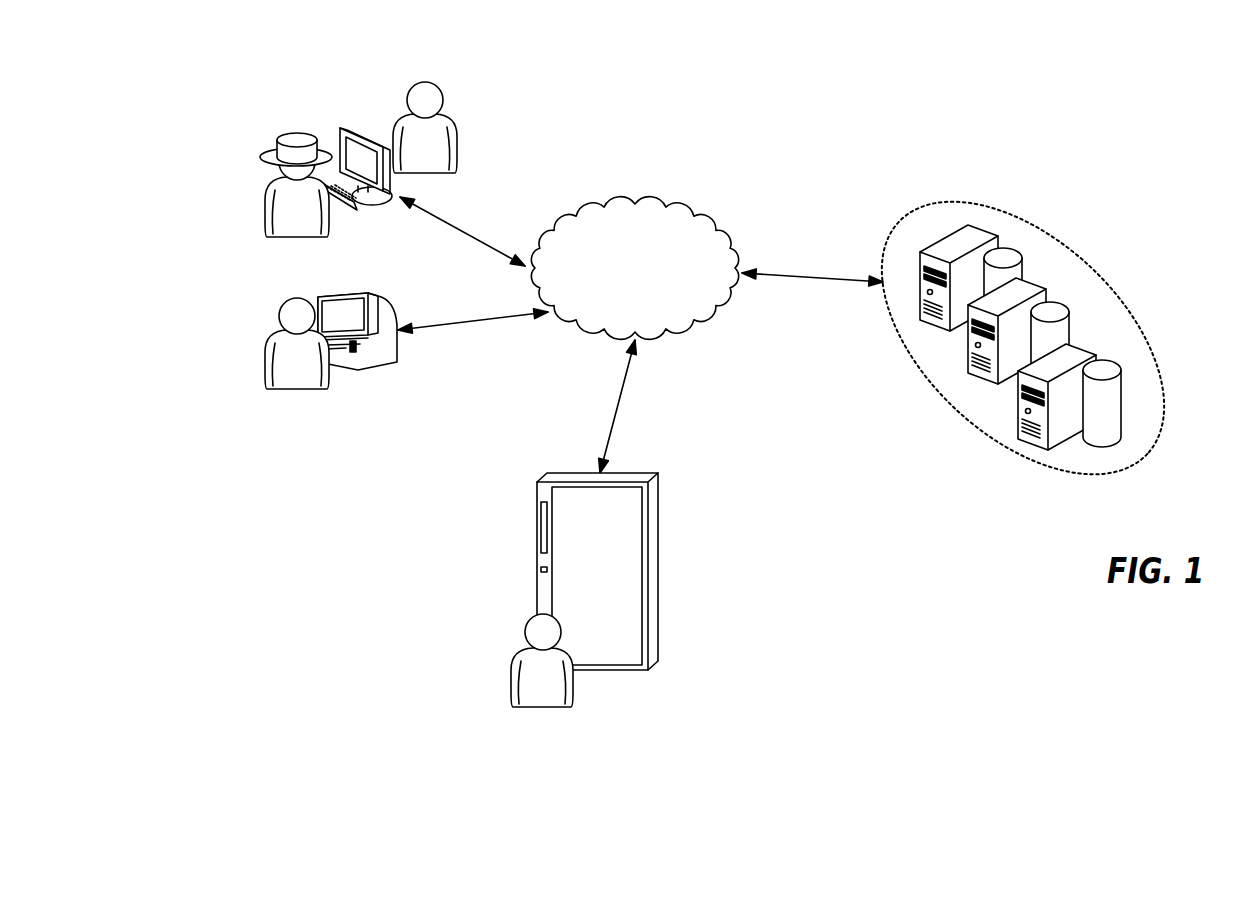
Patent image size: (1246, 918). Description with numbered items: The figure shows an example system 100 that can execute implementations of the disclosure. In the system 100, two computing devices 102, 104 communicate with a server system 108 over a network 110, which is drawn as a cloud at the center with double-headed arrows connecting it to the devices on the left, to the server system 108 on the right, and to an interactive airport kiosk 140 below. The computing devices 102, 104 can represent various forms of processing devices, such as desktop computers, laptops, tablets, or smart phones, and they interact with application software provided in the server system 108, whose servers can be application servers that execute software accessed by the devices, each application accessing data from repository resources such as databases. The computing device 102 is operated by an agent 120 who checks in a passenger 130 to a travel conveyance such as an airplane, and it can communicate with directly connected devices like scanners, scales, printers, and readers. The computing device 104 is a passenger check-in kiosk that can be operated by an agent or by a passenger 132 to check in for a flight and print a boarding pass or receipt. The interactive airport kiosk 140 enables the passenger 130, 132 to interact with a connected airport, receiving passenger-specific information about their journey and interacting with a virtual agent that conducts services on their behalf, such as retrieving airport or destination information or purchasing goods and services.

The system 100 is at (875, 105).
The computing device 102 is at (372, 205).
The computing device 104 is at (390, 355).
The server system 108 is at (1078, 252).
The network 110 is at (633, 197).
The agent 120 is at (273, 165).
The passenger 130 is at (417, 86).
The passenger 132 is at (275, 314).
The interactive airport kiosk 140 is at (660, 538).